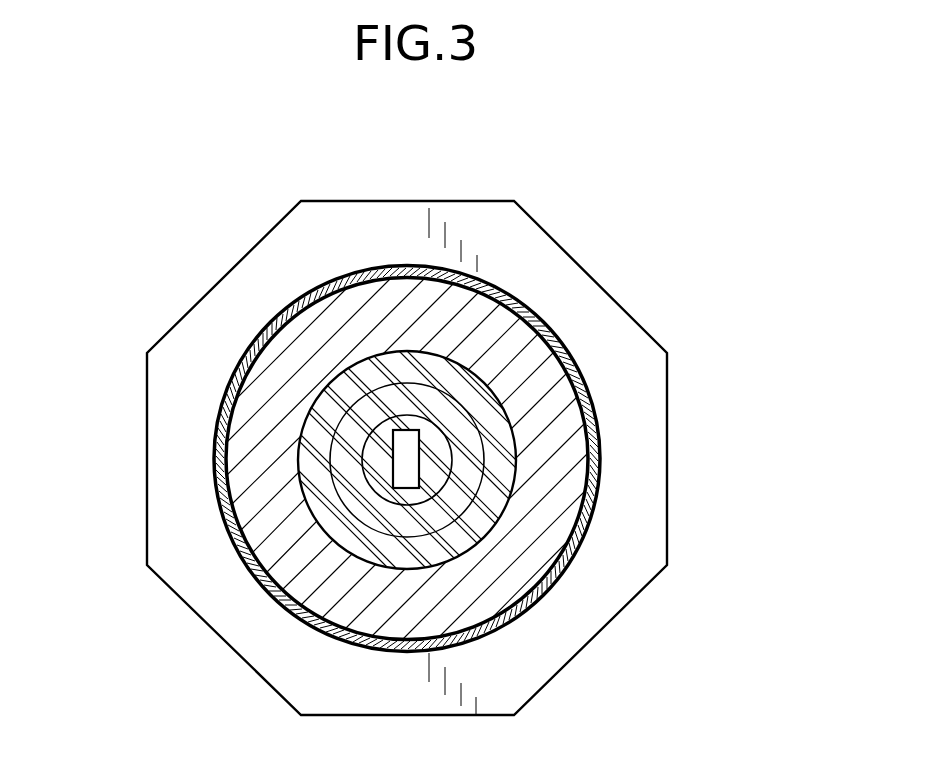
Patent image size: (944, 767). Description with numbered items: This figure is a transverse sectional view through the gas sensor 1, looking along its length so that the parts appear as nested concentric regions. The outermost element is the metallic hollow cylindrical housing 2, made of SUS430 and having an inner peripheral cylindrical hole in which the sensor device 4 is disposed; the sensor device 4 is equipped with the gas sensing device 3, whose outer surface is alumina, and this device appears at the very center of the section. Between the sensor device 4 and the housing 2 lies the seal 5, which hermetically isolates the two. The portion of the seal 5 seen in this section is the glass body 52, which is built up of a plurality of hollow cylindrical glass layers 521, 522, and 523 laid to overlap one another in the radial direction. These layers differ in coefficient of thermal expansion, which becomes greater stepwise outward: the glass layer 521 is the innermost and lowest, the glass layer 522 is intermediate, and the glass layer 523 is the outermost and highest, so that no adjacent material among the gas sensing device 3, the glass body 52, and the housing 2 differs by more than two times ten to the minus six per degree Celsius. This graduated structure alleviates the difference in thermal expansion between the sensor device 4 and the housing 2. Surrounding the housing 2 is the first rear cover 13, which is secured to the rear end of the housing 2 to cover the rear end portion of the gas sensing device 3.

The gas sensor 1 is at (573, 202).
The housing 2 is at (445, 479).
The gas sensing device 3 is at (276, 339).
The sensor device 4 is at (406, 459).
The seal 5 is at (310, 492).
The first rear cover 13 is at (326, 459).
The glass body 52 is at (474, 492).
The glass layer 521 is at (565, 446).
The glass layer 522 is at (549, 460).
The glass layer 523 is at (533, 460).